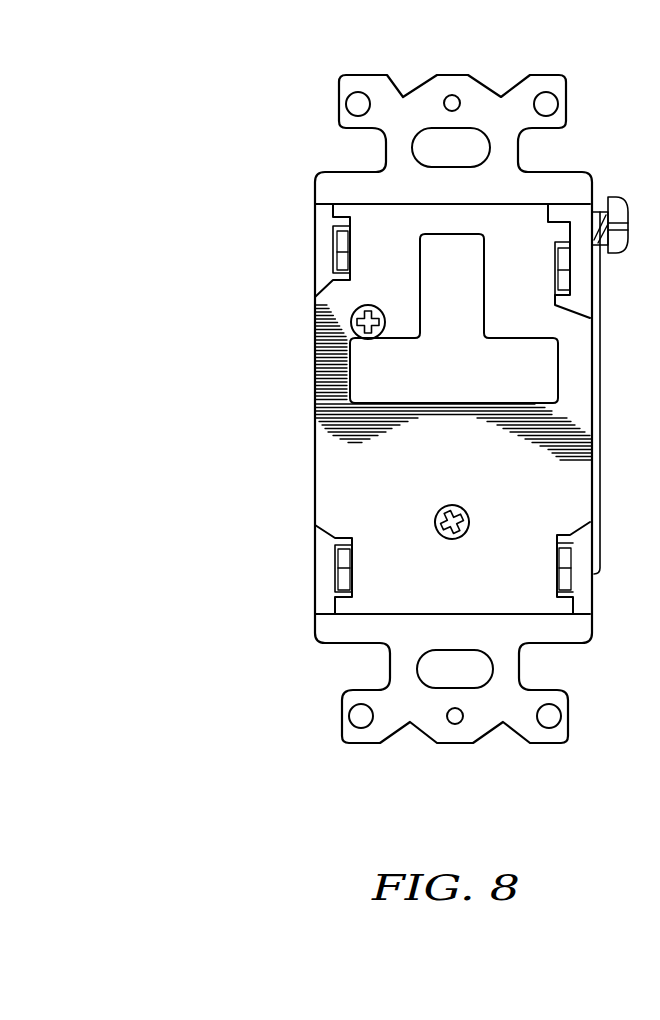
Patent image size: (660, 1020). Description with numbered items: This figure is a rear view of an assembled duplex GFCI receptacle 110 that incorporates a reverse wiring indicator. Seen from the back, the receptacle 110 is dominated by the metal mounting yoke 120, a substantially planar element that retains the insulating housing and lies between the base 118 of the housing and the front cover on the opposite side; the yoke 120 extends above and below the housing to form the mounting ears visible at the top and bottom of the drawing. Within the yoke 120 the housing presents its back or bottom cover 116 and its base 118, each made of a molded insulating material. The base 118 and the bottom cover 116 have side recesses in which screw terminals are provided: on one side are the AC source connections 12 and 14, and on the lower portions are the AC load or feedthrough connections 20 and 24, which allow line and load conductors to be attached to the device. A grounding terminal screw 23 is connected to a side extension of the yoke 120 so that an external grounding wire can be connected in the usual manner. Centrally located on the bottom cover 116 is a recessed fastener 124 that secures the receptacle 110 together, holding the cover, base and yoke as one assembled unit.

The GFCI receptacle 110 is at (306, 124).
The mounting yoke 120 is at (338, 183).
The AC source connection 12 is at (333, 258).
The AC source connection 14 is at (570, 293).
The AC load connection 20 is at (337, 577).
The AC load connection 24 is at (575, 578).
The grounding terminal screw 23 is at (621, 207).
The bottom cover 116 is at (342, 470).
The base 118 is at (317, 539).
The recessed fastener 124 is at (379, 306).